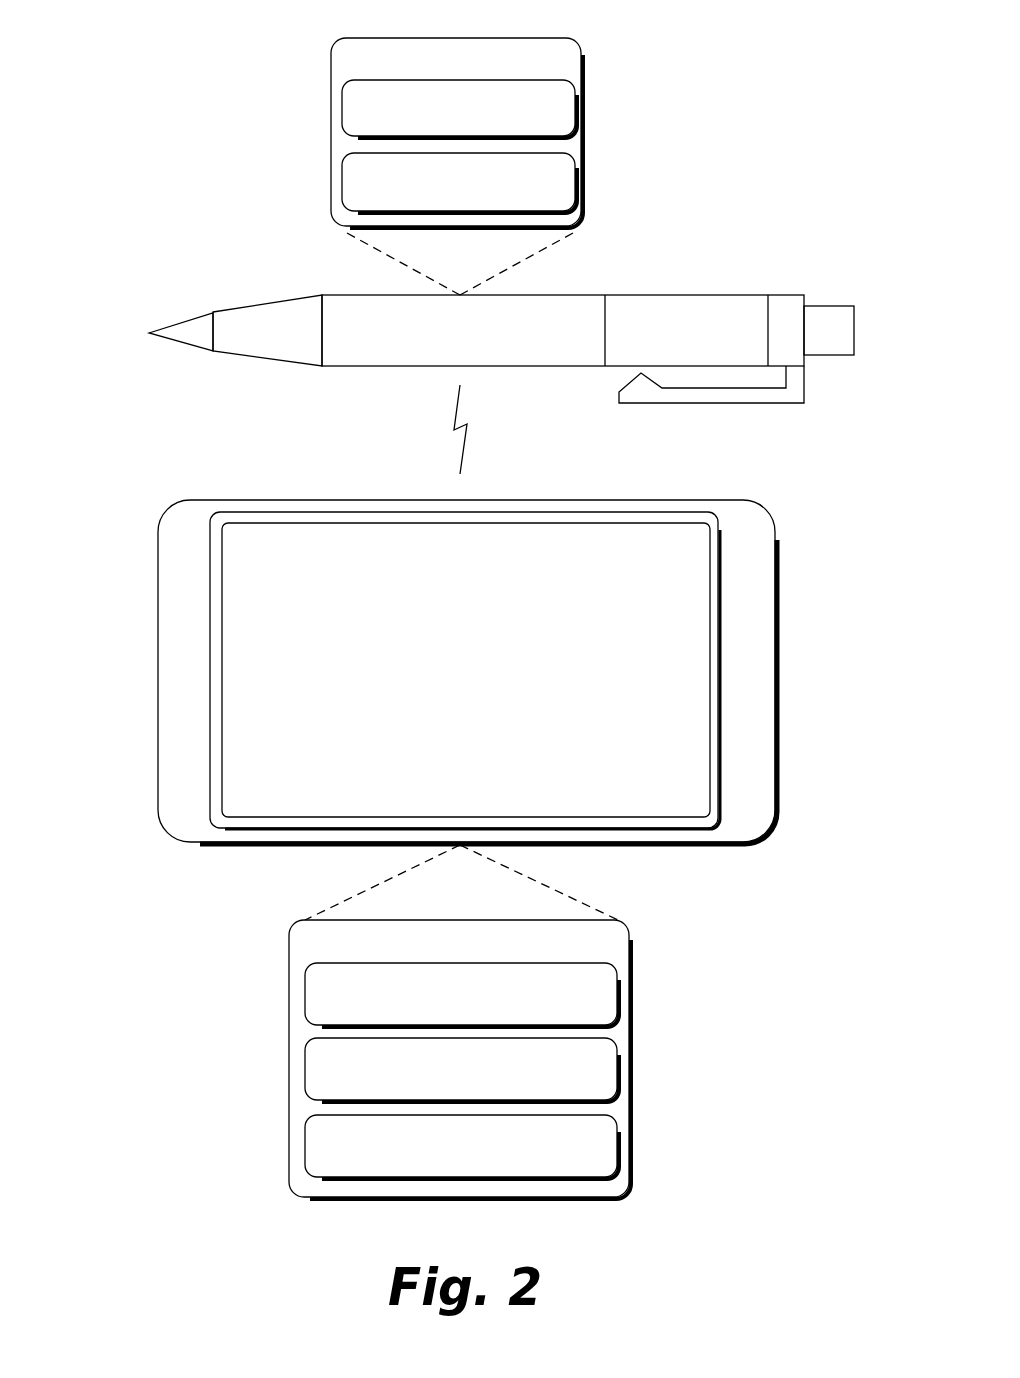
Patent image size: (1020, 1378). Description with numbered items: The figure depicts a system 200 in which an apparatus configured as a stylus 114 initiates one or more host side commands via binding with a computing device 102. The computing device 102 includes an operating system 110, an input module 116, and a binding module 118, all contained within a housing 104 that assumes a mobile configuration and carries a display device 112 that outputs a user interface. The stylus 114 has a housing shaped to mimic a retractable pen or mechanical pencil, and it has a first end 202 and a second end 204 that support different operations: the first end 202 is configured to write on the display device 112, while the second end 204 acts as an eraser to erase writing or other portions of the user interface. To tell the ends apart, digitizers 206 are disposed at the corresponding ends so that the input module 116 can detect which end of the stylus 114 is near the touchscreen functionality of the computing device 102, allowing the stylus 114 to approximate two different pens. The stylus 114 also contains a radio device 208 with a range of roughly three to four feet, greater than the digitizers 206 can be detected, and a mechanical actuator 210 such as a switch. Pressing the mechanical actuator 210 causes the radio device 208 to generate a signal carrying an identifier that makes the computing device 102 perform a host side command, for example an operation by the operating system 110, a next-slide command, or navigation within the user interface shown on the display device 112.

The system 200 is at (160, 56).
The stylus 114 is at (507, 70).
The digitizers 206 is at (525, 121).
The radio device 208 is at (545, 195).
The first end 202 is at (182, 273).
The second end 204 is at (819, 275).
The mechanical actuator 210 is at (831, 382).
The housing 104 is at (174, 498).
The display device 112 is at (700, 813).
The computing device 102 is at (568, 950).
The operating system 110 is at (567, 1006).
The input module 116 is at (545, 1081).
The binding module 118 is at (557, 1158).